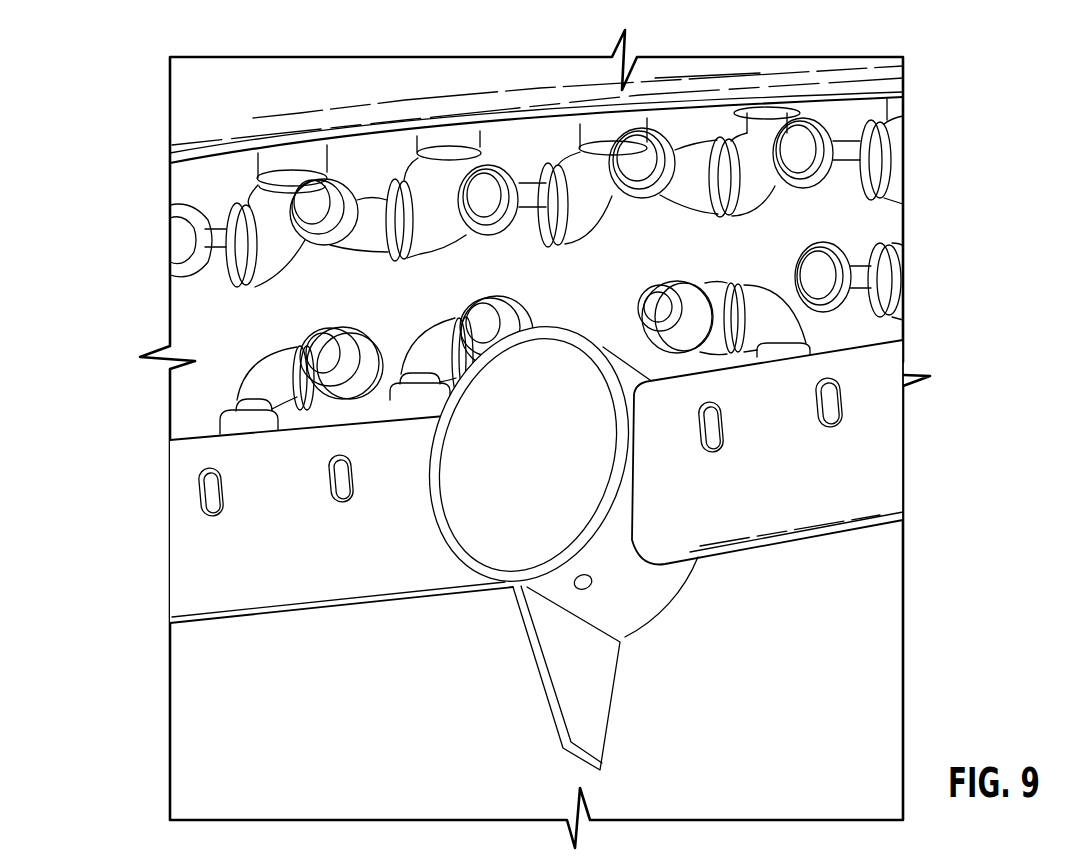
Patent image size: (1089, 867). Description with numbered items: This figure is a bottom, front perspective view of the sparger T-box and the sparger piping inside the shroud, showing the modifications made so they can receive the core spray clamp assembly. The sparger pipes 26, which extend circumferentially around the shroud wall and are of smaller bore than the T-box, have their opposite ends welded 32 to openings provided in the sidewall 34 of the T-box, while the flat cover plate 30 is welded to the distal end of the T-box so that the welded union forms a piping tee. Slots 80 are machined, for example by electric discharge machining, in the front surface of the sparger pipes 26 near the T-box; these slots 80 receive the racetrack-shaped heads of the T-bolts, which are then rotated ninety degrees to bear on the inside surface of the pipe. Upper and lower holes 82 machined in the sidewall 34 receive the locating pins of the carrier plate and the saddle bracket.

The sparger pipe 26 is at (207, 572).
The cover plate 30 is at (535, 482).
The weld 32 is at (453, 557).
The sidewall 34 is at (653, 597).
The slot 80 is at (202, 488).
The hole 82 is at (591, 586).